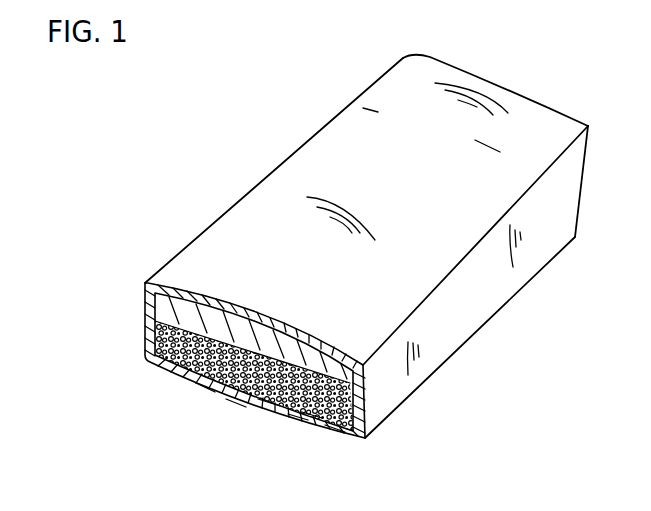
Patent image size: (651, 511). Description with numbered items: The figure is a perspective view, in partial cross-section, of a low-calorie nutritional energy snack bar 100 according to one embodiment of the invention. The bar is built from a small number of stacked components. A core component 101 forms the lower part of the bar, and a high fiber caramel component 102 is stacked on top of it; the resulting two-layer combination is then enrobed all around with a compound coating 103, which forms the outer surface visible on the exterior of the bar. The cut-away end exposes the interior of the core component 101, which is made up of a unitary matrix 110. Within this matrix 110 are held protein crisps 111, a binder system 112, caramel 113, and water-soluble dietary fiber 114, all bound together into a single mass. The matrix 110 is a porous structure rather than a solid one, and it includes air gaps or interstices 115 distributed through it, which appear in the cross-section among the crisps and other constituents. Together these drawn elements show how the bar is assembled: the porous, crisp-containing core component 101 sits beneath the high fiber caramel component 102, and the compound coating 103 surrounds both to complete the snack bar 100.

The low-calorie nutritional energy snack bar 100 is at (168, 173).
The core component 101 is at (257, 360).
The high fiber caramel component 102 is at (197, 312).
The compound coating 103 is at (147, 316).
The unitary matrix 110 is at (333, 427).
The protein crisps 111 is at (310, 414).
The binder system 112 is at (270, 401).
The caramel 113 is at (297, 412).
The water-soluble dietary fiber 114 is at (207, 390).
The air gaps or interstices 115 is at (236, 402).